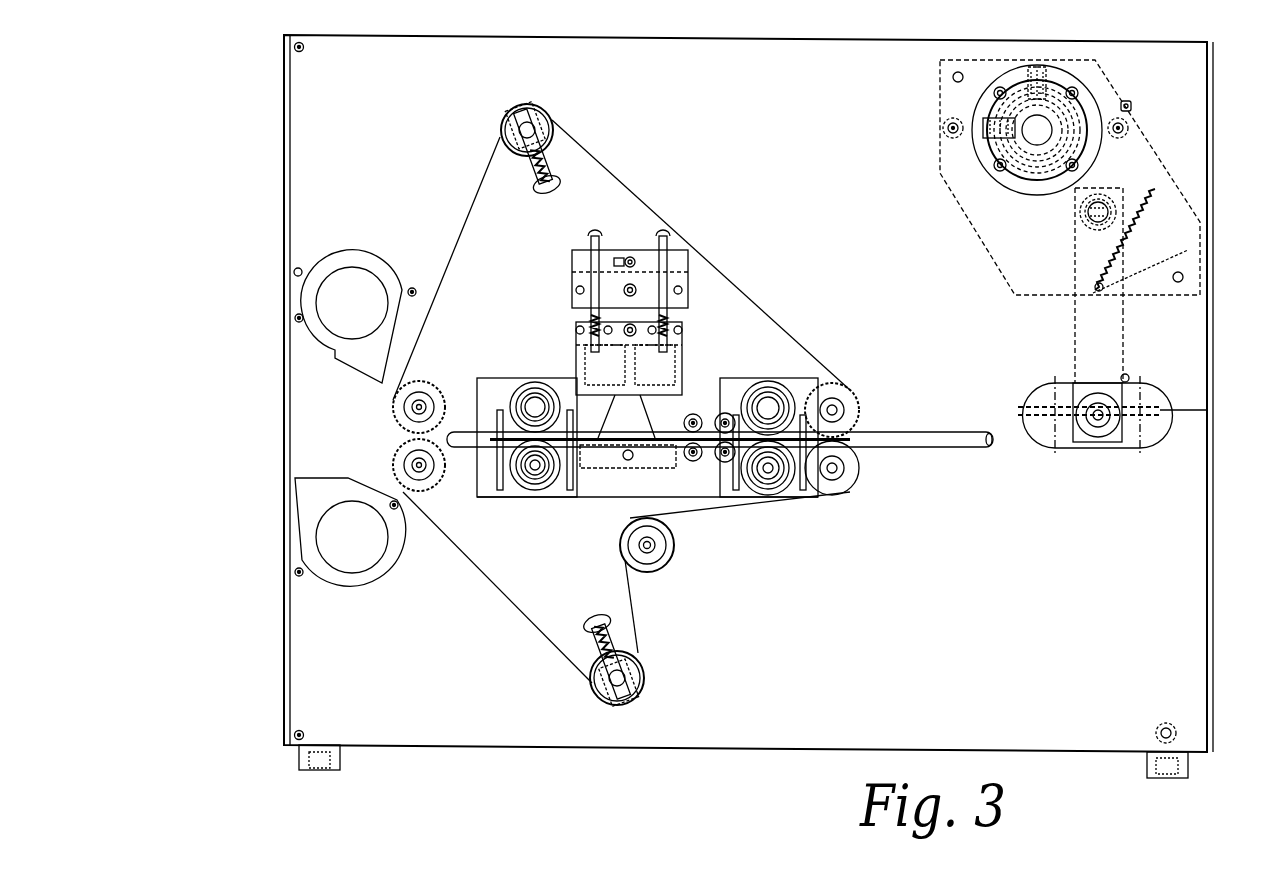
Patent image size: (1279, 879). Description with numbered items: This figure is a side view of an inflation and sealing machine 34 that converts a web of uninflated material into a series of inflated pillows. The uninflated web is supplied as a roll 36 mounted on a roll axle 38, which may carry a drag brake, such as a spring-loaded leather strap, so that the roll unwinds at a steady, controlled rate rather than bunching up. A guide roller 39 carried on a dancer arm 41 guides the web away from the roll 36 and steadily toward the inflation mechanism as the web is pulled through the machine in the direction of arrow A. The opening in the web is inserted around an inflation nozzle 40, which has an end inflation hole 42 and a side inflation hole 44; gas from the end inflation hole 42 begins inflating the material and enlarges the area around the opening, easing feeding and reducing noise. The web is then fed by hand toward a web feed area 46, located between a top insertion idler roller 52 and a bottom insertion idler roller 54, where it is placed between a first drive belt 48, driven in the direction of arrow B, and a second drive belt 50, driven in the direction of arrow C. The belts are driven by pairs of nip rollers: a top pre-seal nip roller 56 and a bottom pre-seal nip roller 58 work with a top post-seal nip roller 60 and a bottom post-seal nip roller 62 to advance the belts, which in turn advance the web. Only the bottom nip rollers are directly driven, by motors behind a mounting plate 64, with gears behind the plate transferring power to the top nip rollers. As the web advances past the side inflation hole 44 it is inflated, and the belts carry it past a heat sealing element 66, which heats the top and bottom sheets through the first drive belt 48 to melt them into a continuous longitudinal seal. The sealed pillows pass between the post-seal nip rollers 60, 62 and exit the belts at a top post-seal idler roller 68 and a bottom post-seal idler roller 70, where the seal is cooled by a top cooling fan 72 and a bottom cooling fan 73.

The inflation and sealing machine 34 is at (222, 197).
The roll 36 is at (1000, 150).
The roll axle 38 is at (1030, 118).
The guide roller 39 is at (1098, 430).
The inflation nozzle 40 is at (927, 440).
The dancer arm 41 is at (1075, 340).
The end inflation hole 42 is at (993, 449).
The side inflation hole 44 is at (693, 414).
The web feed area 46 is at (868, 425).
The first drive belt 48 is at (785, 328).
The second drive belt 50 is at (632, 607).
The top insertion idler roller 52 is at (838, 385).
The bottom insertion idler roller 54 is at (838, 495).
The top pre-seal nip roller 56 is at (757, 382).
The bottom pre-seal nip roller 58 is at (768, 495).
The top post-seal nip roller 60 is at (535, 382).
The bottom post-seal nip roller 62 is at (537, 490).
The mounting plate 64 is at (1190, 572).
The heat sealing element 66 is at (640, 445).
The top post-seal idler roller 68 is at (430, 385).
The bottom post-seal idler roller 70 is at (432, 486).
The top cooling fan 72 is at (352, 262).
The bottom cooling fan 73 is at (338, 585).